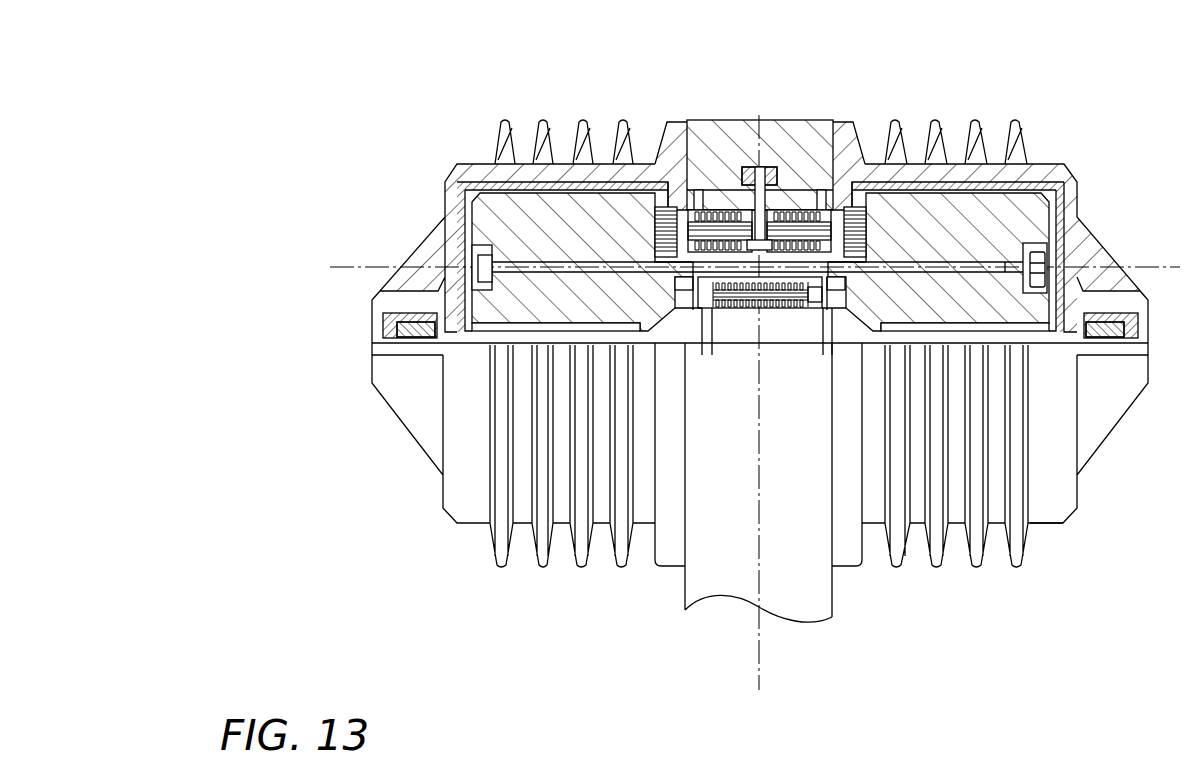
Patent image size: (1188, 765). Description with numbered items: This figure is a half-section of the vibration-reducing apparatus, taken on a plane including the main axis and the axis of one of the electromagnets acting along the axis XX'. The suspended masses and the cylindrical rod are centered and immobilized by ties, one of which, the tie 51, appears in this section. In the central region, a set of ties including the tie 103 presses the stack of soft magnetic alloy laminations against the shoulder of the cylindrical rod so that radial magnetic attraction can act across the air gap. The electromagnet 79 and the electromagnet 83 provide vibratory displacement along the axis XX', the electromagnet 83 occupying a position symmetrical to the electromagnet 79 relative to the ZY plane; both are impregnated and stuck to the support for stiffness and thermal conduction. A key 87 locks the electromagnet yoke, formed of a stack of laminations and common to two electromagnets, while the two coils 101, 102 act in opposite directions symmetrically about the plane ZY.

The tie 51 is at (985, 262).
The electromagnet 79 is at (800, 208).
The electromagnet 83 is at (728, 210).
The key 87 is at (783, 210).
The coil 101 is at (655, 137).
The coil 102 is at (830, 187).
The tie 103 is at (827, 300).